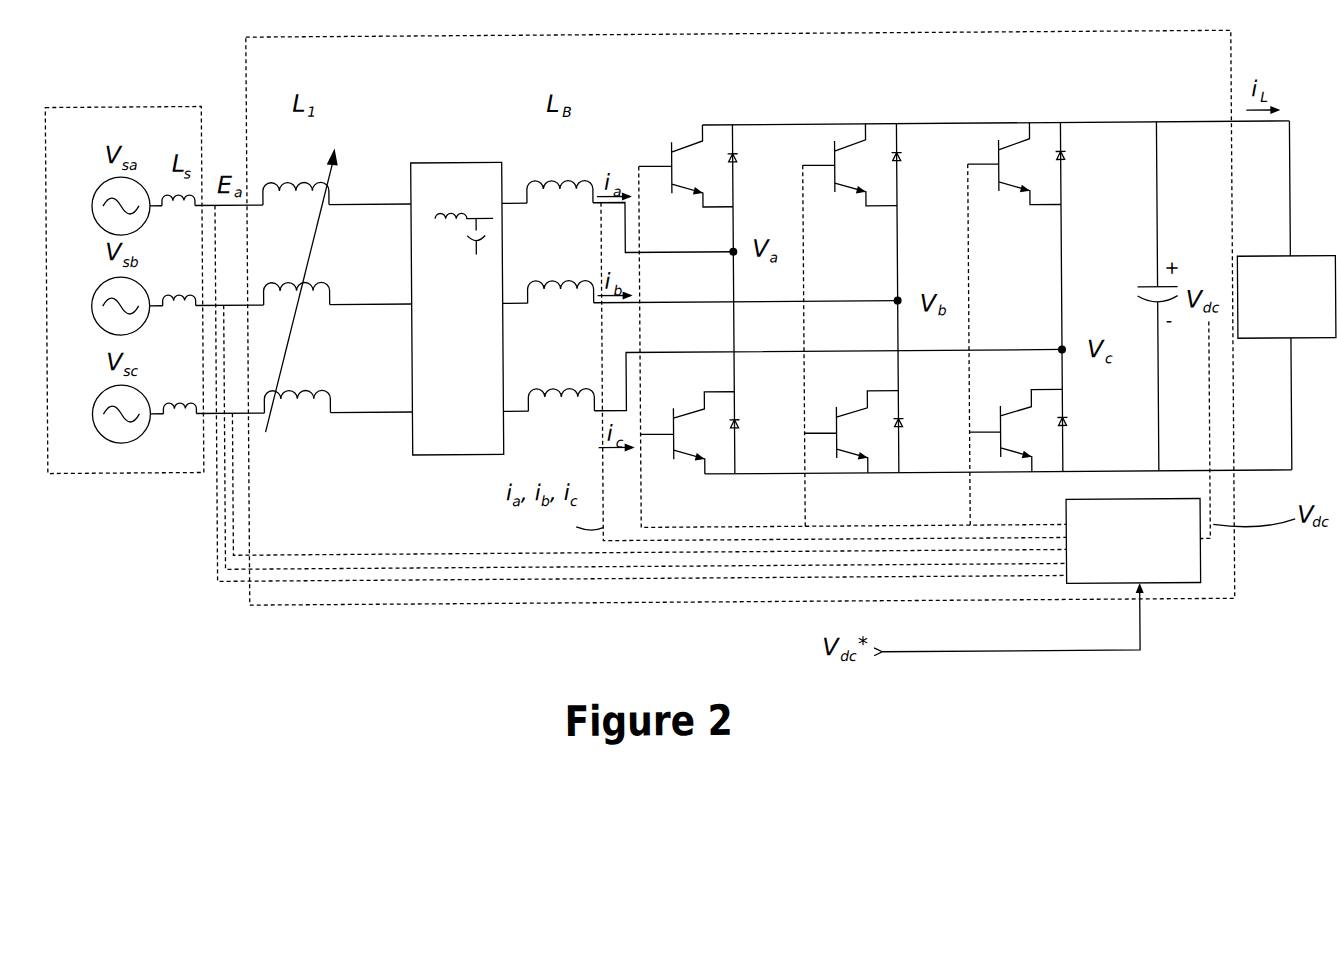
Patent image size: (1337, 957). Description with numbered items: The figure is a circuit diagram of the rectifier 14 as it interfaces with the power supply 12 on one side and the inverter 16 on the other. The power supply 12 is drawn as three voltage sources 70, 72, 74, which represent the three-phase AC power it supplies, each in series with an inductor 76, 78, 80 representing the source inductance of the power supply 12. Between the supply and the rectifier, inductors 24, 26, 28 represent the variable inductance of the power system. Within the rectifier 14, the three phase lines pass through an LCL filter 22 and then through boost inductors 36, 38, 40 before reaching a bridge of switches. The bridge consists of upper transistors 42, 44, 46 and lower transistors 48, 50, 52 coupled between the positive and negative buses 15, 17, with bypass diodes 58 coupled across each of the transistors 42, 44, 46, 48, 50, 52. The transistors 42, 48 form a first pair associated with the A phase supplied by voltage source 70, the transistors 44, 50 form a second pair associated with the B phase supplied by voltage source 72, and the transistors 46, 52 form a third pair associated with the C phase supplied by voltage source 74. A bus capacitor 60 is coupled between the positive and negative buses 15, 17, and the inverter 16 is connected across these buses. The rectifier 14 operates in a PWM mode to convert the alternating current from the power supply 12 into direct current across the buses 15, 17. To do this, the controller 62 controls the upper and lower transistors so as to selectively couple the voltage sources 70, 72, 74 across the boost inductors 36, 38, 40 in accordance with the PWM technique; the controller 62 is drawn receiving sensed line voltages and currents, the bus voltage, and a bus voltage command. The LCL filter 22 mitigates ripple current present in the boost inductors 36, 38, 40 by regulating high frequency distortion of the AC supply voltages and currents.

The power supply 12 is at (134, 103).
The rectifier 14 is at (248, 70).
The positive bus 15 is at (1110, 124).
The inverter 16 is at (1278, 338).
The negative bus 17 is at (1107, 473).
The LCL filter 22 is at (456, 161).
The inductor 24 is at (306, 176).
The inductor 26 is at (323, 279).
The inductor 28 is at (302, 386).
The boost inductor 36 is at (569, 176).
The boost inductor 38 is at (569, 276).
The boost inductor 40 is at (568, 386).
The upper transistor 42 is at (671, 150).
The upper transistor 44 is at (834, 151).
The upper transistor 46 is at (998, 152).
The lower transistor 48 is at (673, 452).
The lower transistor 50 is at (836, 452).
The lower transistor 52 is at (1000, 453).
The bypass diode 58 is at (739, 158).
The bus capacitor 60 is at (1151, 289).
The controller 62 is at (1119, 577).
The voltage source 70 is at (91, 206).
The voltage source 72 is at (90, 304).
The voltage source 74 is at (90, 412).
The inductor 76 is at (178, 196).
The inductor 78 is at (178, 297).
The inductor 80 is at (178, 405).